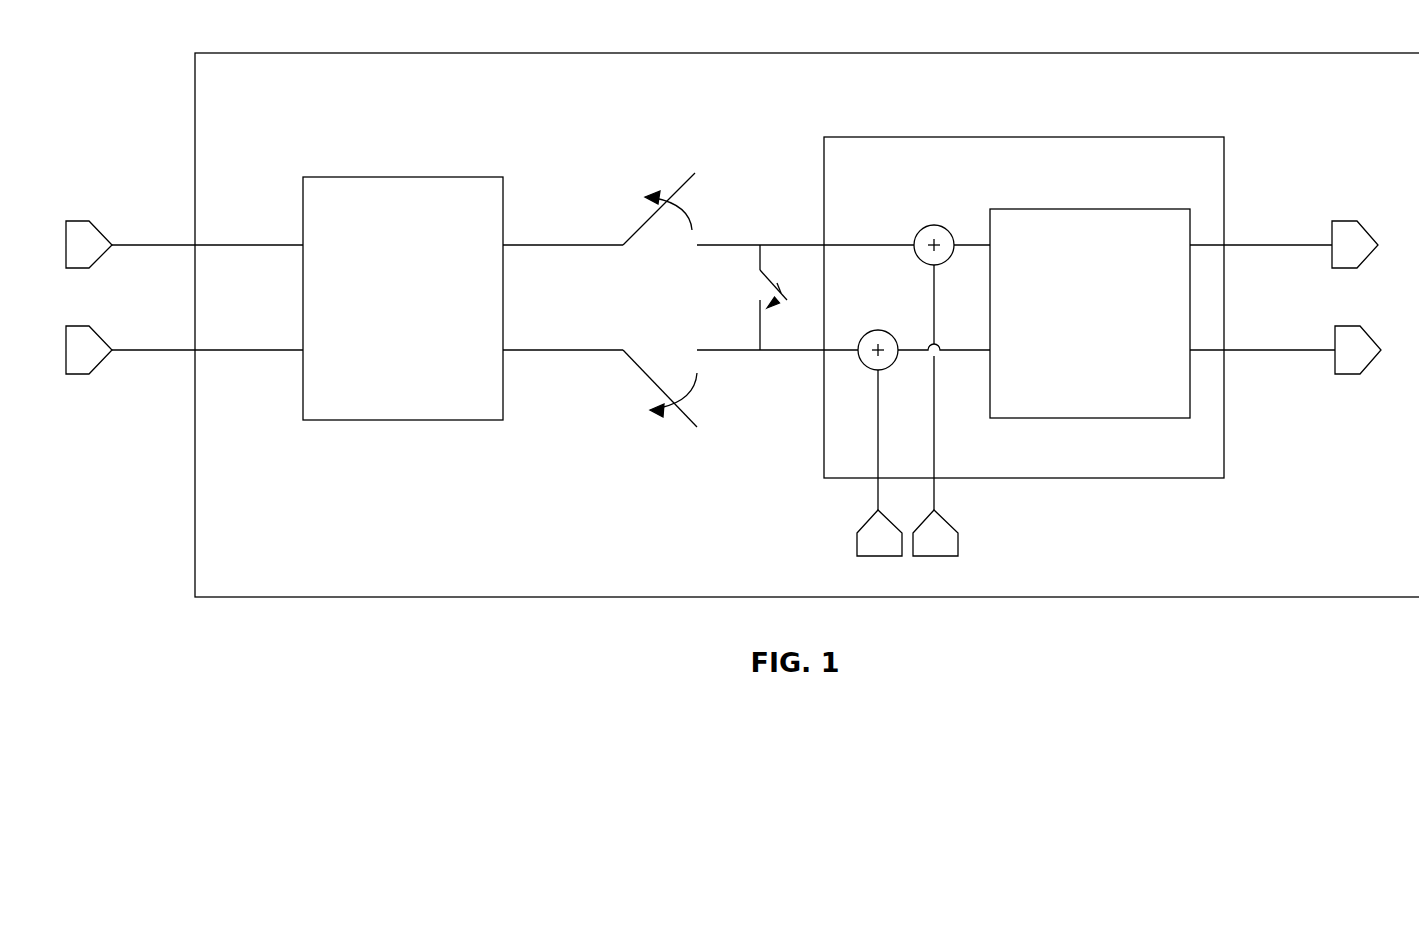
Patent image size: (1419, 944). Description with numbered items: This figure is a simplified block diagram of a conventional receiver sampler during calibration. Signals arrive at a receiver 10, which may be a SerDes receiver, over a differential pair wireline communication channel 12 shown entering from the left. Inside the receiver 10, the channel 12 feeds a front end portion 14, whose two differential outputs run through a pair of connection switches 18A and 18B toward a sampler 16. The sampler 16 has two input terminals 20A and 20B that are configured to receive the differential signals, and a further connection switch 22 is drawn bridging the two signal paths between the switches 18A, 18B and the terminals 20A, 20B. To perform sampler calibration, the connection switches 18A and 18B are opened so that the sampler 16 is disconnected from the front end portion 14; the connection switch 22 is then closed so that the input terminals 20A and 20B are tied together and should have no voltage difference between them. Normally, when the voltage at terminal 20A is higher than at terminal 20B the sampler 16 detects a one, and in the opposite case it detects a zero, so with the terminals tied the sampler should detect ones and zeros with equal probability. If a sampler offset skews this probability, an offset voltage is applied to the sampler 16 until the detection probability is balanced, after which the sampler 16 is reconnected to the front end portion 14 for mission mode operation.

The receiver 10 is at (1376, 93).
The differential pair wireline communication channel 12 is at (175, 246).
The front end portion 14 is at (389, 311).
The sampler 16 is at (1186, 176).
The connection switch 18A is at (690, 172).
The connection switch 18B is at (687, 427).
The input terminal 20A is at (822, 242).
The input terminal 20B is at (822, 347).
The connection switch 22 is at (769, 272).